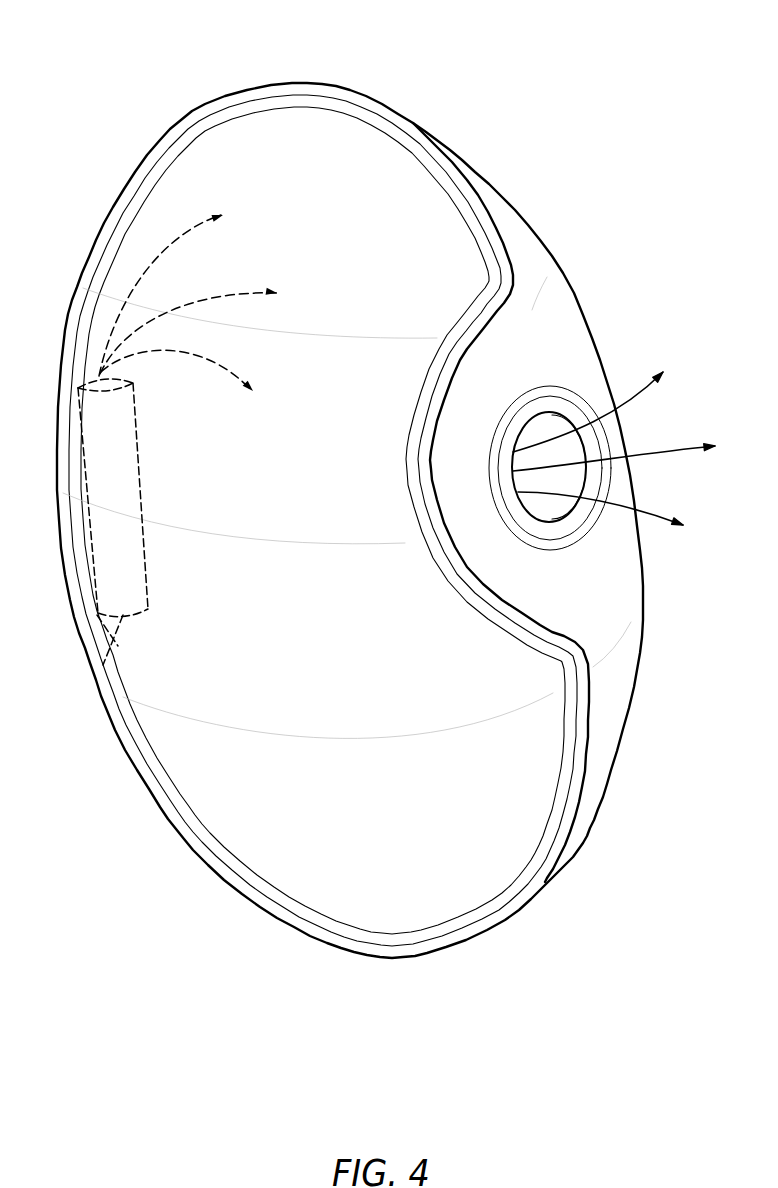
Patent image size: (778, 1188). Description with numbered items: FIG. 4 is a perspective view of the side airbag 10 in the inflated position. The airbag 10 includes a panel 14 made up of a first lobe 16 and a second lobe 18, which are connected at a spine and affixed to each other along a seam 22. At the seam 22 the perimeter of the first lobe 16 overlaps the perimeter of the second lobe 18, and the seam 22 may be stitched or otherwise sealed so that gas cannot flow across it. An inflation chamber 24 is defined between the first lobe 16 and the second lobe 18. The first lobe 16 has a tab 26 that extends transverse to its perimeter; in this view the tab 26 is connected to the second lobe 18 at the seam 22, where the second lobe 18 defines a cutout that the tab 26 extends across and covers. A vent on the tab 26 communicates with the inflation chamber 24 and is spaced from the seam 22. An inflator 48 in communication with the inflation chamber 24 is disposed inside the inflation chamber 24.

The airbag 10 is at (681, 62).
The panel 14 is at (290, 855).
The first lobe 16 is at (562, 335).
The second lobe 18 is at (267, 142).
The seam 22 is at (497, 230).
The inflation chamber 24 is at (560, 477).
The tab 26 is at (492, 553).
The inflator 48 is at (93, 677).